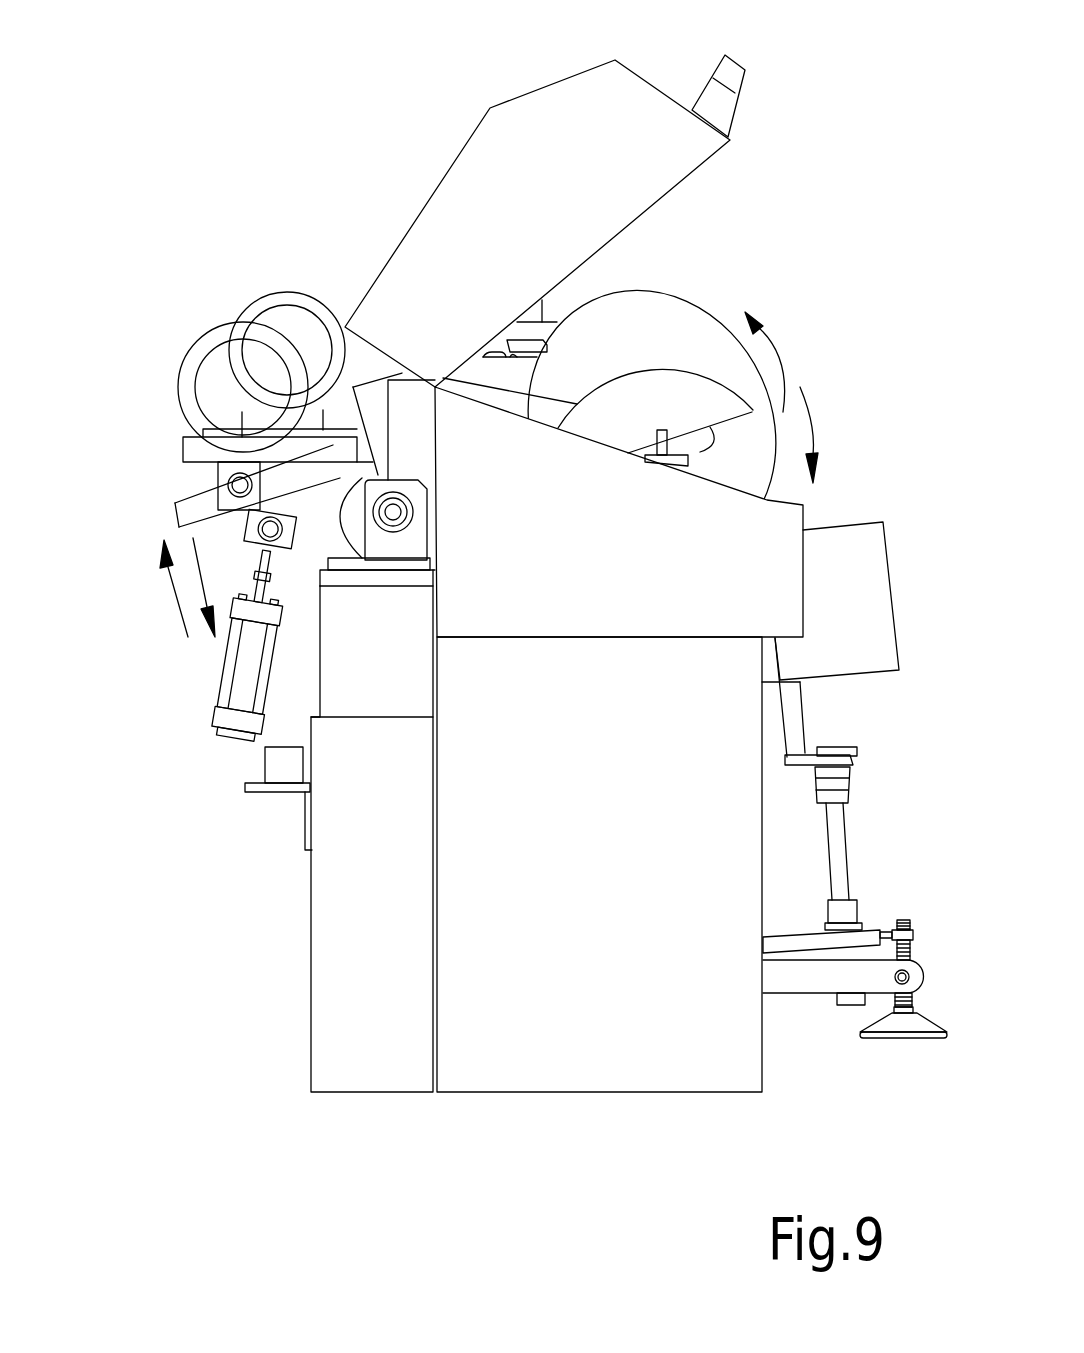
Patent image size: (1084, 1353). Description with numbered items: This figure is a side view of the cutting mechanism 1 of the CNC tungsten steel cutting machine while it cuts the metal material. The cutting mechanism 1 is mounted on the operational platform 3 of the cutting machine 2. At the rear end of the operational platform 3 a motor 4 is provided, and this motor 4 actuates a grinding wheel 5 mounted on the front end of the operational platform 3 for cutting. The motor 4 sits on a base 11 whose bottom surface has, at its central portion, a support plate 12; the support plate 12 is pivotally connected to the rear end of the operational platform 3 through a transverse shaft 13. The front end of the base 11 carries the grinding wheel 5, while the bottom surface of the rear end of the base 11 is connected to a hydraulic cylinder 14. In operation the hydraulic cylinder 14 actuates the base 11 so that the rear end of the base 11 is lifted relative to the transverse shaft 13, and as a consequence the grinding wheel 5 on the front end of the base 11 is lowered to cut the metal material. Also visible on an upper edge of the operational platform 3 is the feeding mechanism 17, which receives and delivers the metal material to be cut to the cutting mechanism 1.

The cutting mechanism 1 is at (688, 325).
The cutting machine 2 is at (330, 163).
The operational platform 3 is at (393, 575).
The motor 4 is at (210, 393).
The grinding wheel 5 is at (700, 453).
The base 11 is at (190, 510).
The support plate 12 is at (368, 473).
The transverse shaft 13 is at (413, 512).
The hydraulic cylinder 14 is at (273, 684).
The feeding mechanism 17 is at (840, 797).